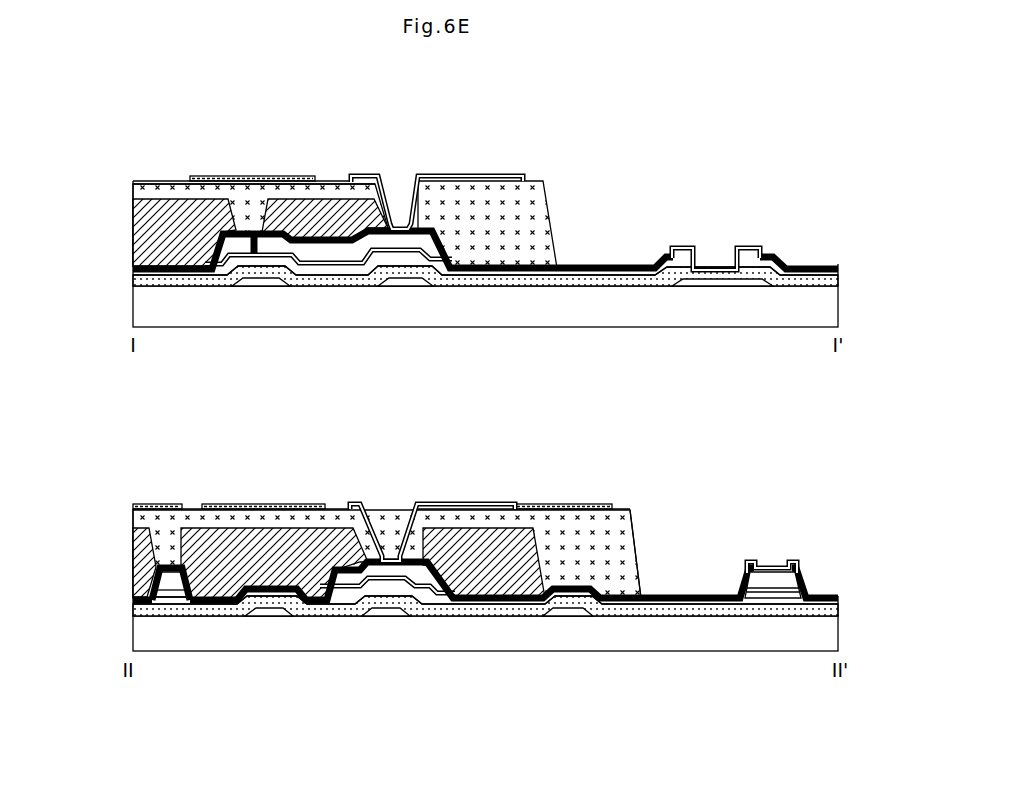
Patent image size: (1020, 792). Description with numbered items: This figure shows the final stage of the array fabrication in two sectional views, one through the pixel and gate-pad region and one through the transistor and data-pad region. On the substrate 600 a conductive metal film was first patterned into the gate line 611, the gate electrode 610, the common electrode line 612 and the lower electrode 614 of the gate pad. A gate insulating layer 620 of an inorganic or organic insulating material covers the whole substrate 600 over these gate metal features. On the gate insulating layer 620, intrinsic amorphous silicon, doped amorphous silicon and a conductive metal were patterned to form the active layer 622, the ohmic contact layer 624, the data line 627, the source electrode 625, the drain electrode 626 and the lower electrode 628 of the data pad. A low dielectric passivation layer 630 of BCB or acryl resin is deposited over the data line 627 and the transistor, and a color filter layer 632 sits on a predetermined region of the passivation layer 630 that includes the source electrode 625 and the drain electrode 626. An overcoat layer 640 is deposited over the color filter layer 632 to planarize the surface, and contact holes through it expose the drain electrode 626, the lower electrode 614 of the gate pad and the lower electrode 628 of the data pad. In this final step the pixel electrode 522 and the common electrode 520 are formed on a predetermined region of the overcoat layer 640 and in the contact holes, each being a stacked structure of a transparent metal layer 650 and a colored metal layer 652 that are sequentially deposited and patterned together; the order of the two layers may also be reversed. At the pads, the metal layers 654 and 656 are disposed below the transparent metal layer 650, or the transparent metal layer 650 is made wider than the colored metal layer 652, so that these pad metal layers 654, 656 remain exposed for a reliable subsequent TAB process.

The common electrode 520 is at (180, 162).
The pixel electrode 522 is at (435, 165).
The substrate 600 is at (770, 313).
The gate electrode 610 is at (262, 288).
The gate line 611 is at (270, 618).
The common electrode line 612 is at (401, 287).
The lower electrode of a gate pad 614 is at (717, 287).
The gate insulating layer 620 is at (584, 285).
The active layer 622 is at (335, 267).
The ohmic contact layer 624 is at (372, 262).
The source electrode 625 is at (250, 239).
The drain electrode 626 is at (272, 228).
The data line 627 is at (170, 570).
The lower electrode of a data pad 628 is at (756, 580).
The passivation layer 630 is at (444, 240).
The color filter layer 632 is at (345, 215).
The overcoat layer 640 is at (518, 190).
The transparent metal layer 650 is at (190, 180).
The colored metal layer 652 is at (240, 175).
The metal layer formed at the pad 654 is at (714, 252).
The metal layer formed at the pad 656 is at (772, 552).